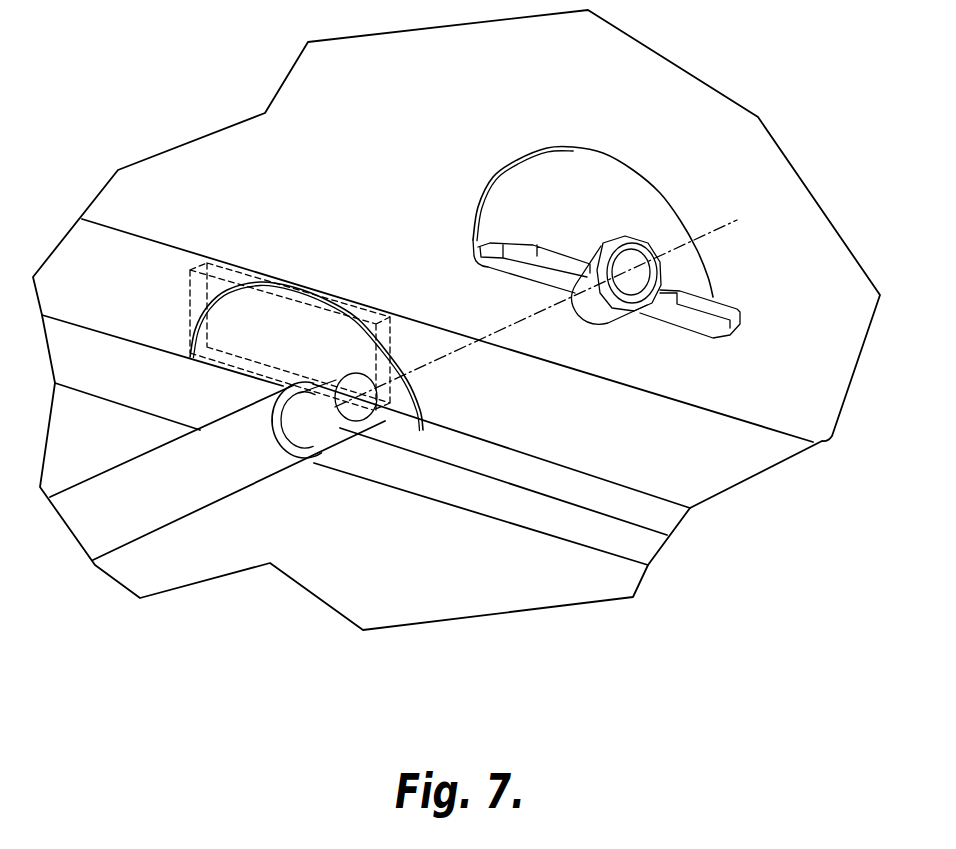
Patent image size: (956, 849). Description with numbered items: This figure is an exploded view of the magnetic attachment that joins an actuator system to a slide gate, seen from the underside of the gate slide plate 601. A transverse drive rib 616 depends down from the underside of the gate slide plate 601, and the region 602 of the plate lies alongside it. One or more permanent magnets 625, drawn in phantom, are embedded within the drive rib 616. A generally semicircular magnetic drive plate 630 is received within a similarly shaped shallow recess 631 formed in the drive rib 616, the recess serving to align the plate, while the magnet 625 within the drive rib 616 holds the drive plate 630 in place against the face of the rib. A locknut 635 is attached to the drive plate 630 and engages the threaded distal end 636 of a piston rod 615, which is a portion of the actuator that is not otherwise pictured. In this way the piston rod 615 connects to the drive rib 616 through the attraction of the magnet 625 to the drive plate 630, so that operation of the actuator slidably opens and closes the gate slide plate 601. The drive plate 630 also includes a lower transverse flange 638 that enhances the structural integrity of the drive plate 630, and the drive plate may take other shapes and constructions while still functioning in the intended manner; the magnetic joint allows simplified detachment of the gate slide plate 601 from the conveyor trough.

The gate slide plate 601 is at (495, 86).
The ledge 602 is at (114, 439).
The transverse drive rib 616 is at (594, 429).
The permanent magnet 625 is at (225, 263).
The shallow recess 631 is at (342, 325).
The magnetic drive plate 630 is at (623, 182).
The locknut 635 is at (607, 310).
The lower transverse flange 638 is at (715, 323).
The threaded distal end 636 is at (332, 433).
The piston rod 615 is at (177, 508).